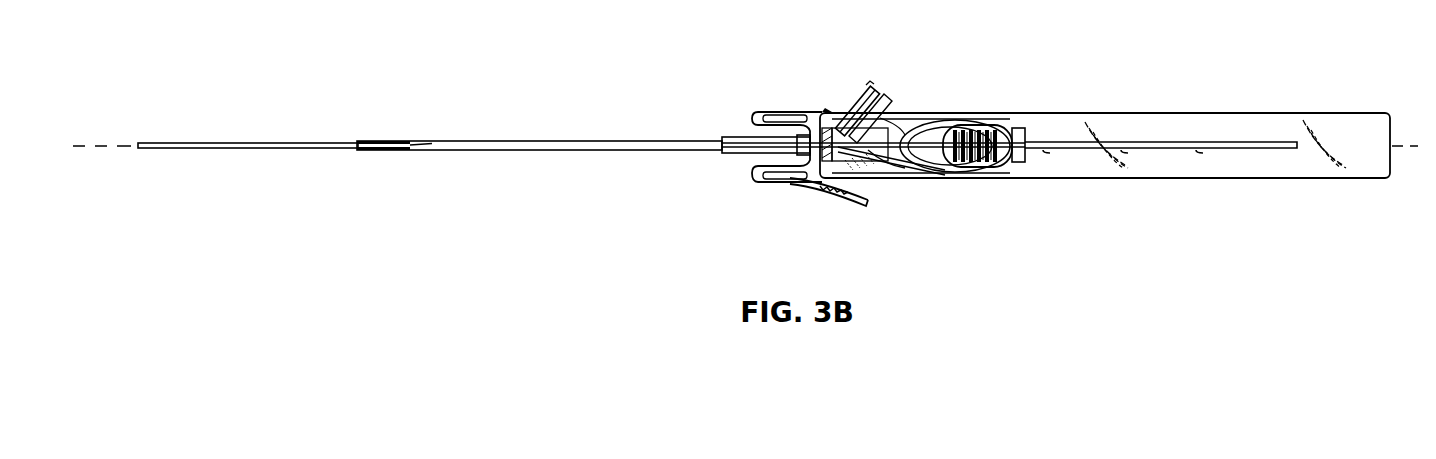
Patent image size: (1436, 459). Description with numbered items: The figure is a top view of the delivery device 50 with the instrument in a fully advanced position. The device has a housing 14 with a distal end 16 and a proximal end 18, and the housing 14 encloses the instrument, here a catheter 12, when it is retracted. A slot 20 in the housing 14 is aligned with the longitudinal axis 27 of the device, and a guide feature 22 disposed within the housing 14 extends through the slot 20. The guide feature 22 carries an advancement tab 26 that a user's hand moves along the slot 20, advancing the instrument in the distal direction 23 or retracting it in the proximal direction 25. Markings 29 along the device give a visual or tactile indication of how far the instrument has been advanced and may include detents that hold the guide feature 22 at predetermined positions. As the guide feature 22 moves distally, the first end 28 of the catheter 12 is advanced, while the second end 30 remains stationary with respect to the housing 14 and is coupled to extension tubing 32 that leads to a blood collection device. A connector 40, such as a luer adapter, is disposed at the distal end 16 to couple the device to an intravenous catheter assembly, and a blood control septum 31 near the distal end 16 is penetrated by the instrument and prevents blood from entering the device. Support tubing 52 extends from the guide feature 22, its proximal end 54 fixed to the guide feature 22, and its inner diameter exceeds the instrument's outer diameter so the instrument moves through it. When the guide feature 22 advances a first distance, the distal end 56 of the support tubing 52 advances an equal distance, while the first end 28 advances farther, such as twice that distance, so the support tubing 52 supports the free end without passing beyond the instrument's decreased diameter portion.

The catheter 12 is at (946, 118).
The housing 14 is at (1140, 180).
The distal end 16 is at (826, 110).
The proximal end 18 is at (1351, 105).
The slot 20 is at (1232, 142).
The guide feature 22 is at (895, 128).
The distal direction 23 is at (1088, 60).
The proximal direction 25 is at (1143, 60).
The advancement tab 26 is at (1003, 118).
The longitudinal axis 27 is at (108, 146).
The first end 28 is at (140, 146).
The markings 29 is at (1043, 150).
The second end 30 is at (843, 125).
The blood control septum 31 is at (830, 183).
The extension tubing 32 is at (880, 88).
The connector 40 is at (775, 112).
The delivery device 50 is at (1286, 76).
The support tubing 52 is at (897, 168).
The proximal end 54 is at (940, 172).
The distal end 56 is at (362, 142).